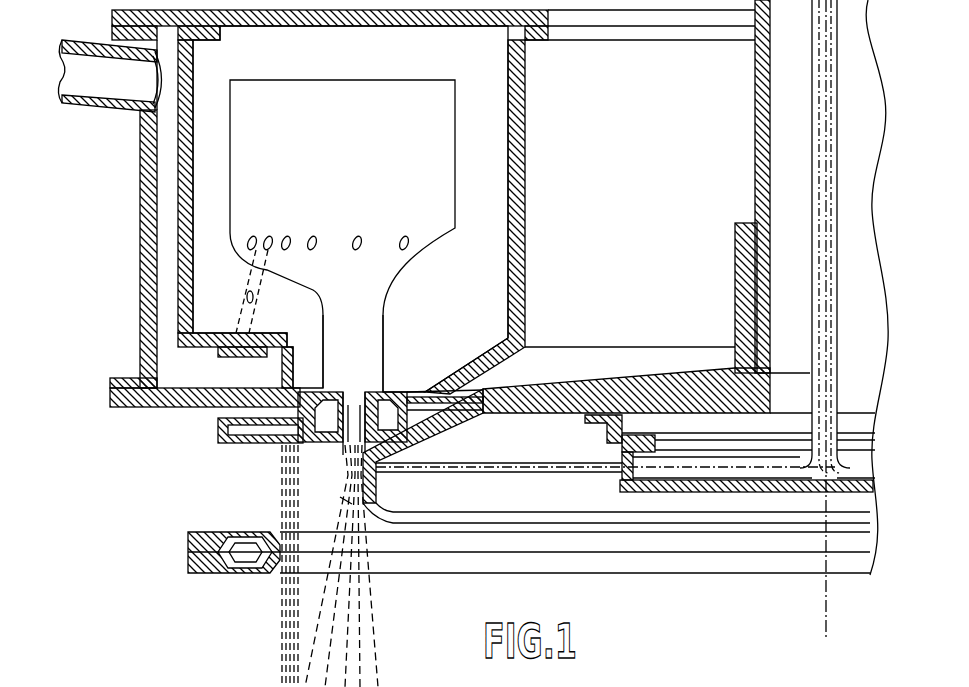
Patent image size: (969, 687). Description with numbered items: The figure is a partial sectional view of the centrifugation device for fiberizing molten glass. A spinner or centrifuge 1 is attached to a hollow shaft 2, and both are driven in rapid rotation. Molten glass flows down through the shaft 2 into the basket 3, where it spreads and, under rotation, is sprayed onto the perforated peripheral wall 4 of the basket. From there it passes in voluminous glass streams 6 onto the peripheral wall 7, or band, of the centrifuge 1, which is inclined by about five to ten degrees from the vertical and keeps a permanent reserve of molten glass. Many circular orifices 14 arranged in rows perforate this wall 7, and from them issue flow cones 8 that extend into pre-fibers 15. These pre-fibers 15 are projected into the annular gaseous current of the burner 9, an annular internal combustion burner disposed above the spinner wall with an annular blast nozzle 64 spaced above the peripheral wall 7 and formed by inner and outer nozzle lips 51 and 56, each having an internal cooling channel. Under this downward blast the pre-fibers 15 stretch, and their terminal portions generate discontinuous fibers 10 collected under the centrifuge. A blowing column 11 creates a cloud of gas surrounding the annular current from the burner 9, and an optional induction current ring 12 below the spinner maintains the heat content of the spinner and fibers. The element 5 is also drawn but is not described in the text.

The centrifuge 1 is at (628, 387).
The shaft 2 is at (757, 128).
The basket 3 is at (710, 493).
The peripheral wall 4 is at (620, 477).
The step 5 is at (592, 462).
The glass streams 6 is at (490, 473).
The peripheral wall 7 is at (405, 466).
The flow cones 8 is at (357, 476).
The burner 9 is at (357, 397).
The discontinuous fibers 10 is at (360, 655).
The blowing column 11 is at (283, 486).
The induction current ring 12 is at (240, 568).
The circular orifices 14 is at (372, 495).
The pre-fibers 15 is at (343, 494).
The inner nozzle lip 51 is at (345, 397).
The outer nozzle lip 56 is at (358, 393).
The annular blast nozzle 64 is at (218, 433).